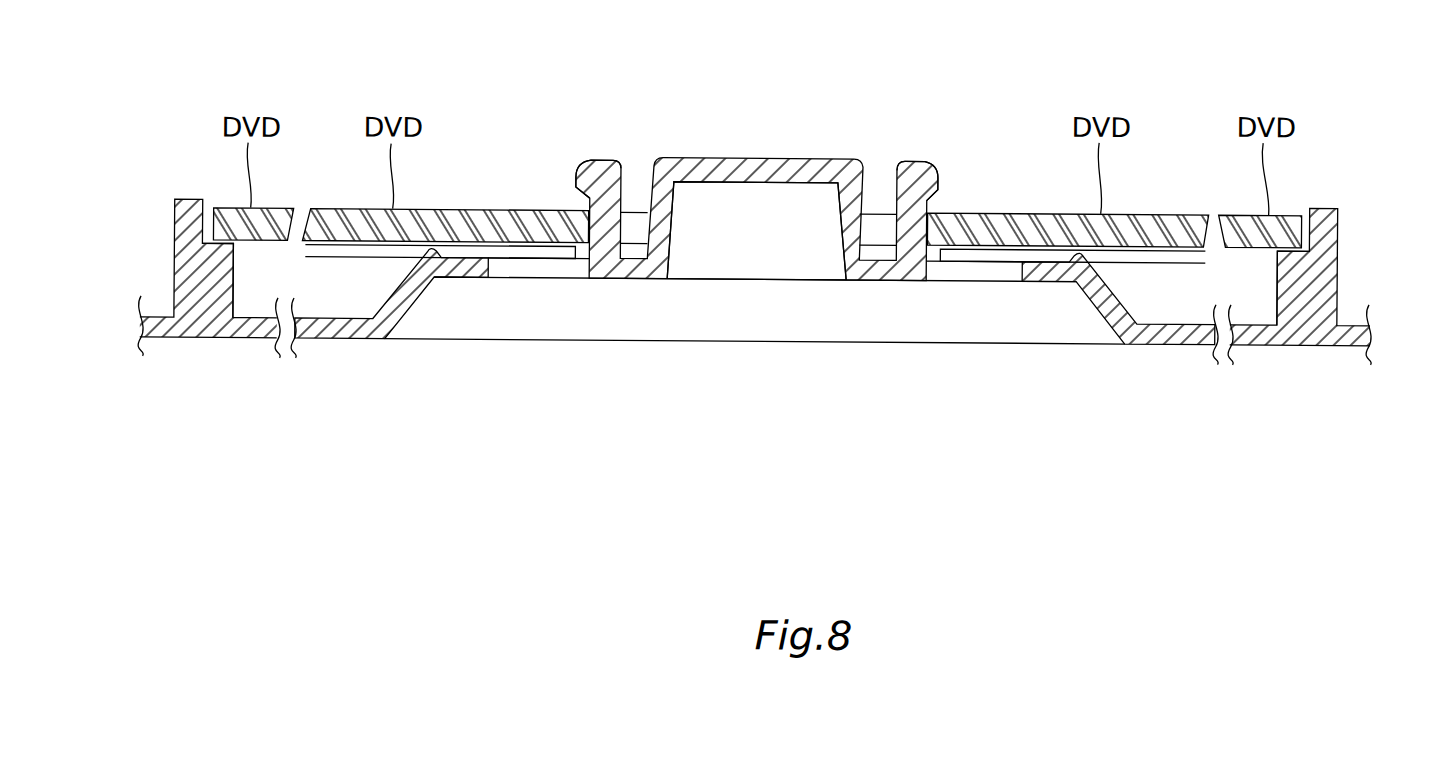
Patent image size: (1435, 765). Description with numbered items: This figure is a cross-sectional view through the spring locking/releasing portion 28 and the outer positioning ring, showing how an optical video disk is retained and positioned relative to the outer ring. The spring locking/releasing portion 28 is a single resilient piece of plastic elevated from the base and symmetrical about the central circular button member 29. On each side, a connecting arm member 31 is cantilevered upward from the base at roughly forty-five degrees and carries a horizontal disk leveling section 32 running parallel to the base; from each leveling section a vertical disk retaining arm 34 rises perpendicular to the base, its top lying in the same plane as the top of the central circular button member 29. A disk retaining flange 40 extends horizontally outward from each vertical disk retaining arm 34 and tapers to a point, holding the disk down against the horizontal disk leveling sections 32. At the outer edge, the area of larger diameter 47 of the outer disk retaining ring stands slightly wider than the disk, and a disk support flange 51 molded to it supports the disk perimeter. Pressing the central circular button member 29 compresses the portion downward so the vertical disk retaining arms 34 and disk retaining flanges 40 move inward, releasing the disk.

The spring locking/releasing portion 28 is at (768, 104).
The central circular button member 29 is at (757, 231).
The connecting arm members 31 is at (390, 298).
The horizontal disk leveling sections 32 is at (425, 250).
The vertical disk retaining arms 34 is at (607, 211).
The disk retaining flanges 40 is at (583, 175).
The areas of larger diameter of the outer disk retaining ring 47 is at (178, 217).
The disk support flanges 51 is at (218, 265).